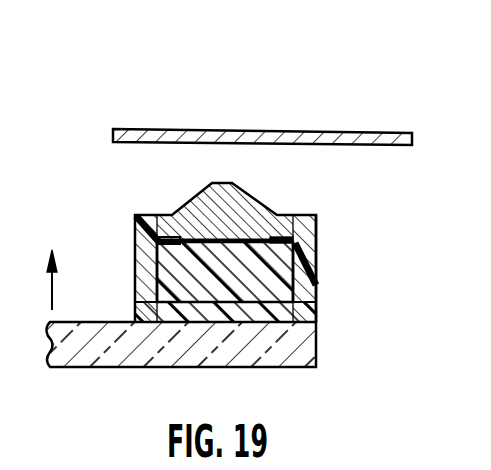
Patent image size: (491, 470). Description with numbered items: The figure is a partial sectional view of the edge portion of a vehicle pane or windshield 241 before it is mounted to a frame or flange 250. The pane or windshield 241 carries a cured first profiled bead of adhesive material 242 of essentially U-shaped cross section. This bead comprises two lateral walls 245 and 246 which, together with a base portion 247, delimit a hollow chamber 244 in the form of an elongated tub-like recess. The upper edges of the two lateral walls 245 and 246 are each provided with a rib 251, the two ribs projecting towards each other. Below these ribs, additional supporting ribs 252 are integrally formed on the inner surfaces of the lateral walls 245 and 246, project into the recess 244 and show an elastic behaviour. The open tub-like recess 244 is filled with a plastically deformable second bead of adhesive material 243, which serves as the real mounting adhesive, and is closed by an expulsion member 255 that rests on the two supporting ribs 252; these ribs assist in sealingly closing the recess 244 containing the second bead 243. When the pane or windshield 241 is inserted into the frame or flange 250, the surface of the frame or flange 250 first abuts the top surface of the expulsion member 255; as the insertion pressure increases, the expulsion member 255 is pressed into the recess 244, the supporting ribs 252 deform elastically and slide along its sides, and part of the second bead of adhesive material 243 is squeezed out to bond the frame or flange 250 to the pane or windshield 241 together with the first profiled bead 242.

The pane or windshield 241 is at (98, 352).
The first profiled bead of adhesive material 242 is at (326, 308).
The second bead of adhesive material 243 is at (300, 287).
The hollow chamber 244 is at (190, 270).
The lateral wall 245 is at (138, 302).
The lateral wall 246 is at (312, 258).
The base portion 247 is at (215, 313).
The frame or flange 250 is at (343, 140).
The rib 251 is at (163, 220).
The supporting rib 252 is at (142, 216).
The expulsion member 255 is at (240, 202).